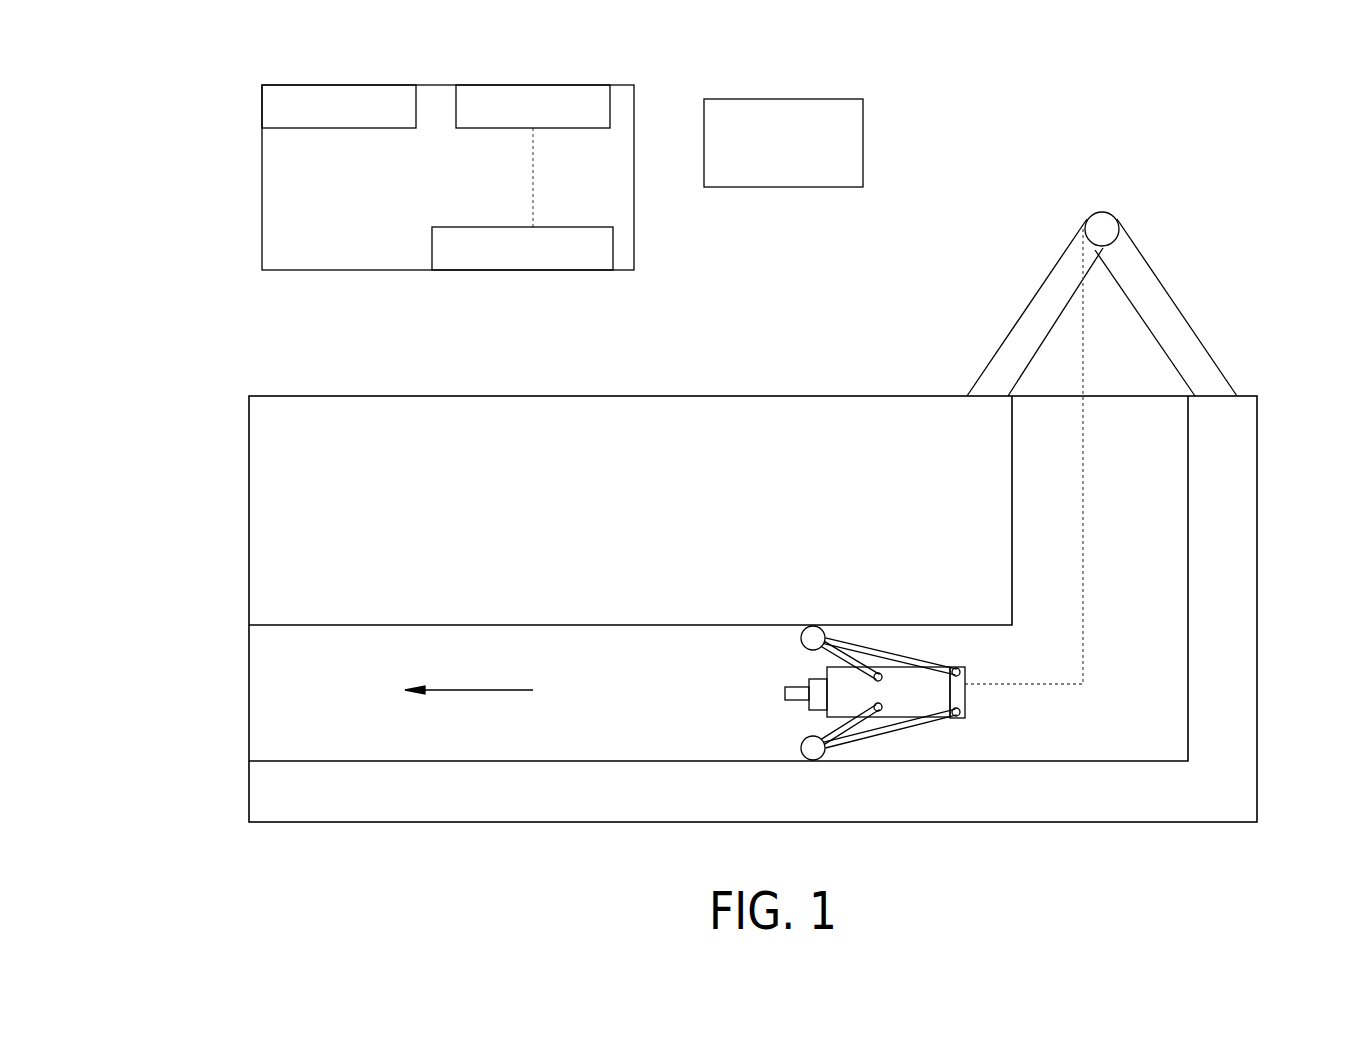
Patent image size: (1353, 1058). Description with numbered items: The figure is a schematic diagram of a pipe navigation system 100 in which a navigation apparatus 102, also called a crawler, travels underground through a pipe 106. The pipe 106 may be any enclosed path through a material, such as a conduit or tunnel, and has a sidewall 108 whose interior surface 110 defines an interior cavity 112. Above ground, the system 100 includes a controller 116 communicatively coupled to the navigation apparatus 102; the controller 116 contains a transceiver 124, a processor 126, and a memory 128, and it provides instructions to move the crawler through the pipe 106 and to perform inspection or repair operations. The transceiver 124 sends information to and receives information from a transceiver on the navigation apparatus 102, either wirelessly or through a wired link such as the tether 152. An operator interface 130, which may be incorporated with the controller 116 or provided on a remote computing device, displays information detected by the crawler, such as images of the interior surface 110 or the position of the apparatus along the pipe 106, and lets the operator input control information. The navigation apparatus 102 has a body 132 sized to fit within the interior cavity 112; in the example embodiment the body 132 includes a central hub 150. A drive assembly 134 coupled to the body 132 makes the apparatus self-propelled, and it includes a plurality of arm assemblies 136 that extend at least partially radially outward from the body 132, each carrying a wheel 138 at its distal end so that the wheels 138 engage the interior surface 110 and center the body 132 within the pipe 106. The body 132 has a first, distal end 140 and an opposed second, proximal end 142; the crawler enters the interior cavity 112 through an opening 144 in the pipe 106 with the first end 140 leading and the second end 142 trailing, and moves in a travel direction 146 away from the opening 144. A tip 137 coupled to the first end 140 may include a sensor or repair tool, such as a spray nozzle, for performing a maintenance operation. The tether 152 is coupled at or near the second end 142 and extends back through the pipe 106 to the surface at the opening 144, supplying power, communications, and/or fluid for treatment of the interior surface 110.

The pipe navigation system 100 is at (200, 86).
The navigation apparatus 102 is at (946, 756).
The pipe 106 is at (342, 761).
The sidewall 108 is at (415, 623).
The interior surface 110 is at (462, 737).
The interior cavity 112 is at (262, 655).
The controller 116 is at (262, 180).
The transceiver 124 is at (470, 270).
The processor 126 is at (347, 85).
The memory 128 is at (578, 85).
The operator interface 130 is at (750, 99).
The body 132 is at (917, 658).
The drive assembly 134 is at (839, 620).
The arm assemblies 136 is at (858, 745).
The tip 137 is at (797, 683).
The wheel 138 is at (810, 626).
The first end 140 is at (805, 740).
The second end 142 is at (958, 692).
The opening 144 is at (1150, 372).
The travel direction 146 is at (502, 690).
The central hub 150 is at (913, 697).
The tether 152 is at (1083, 605).